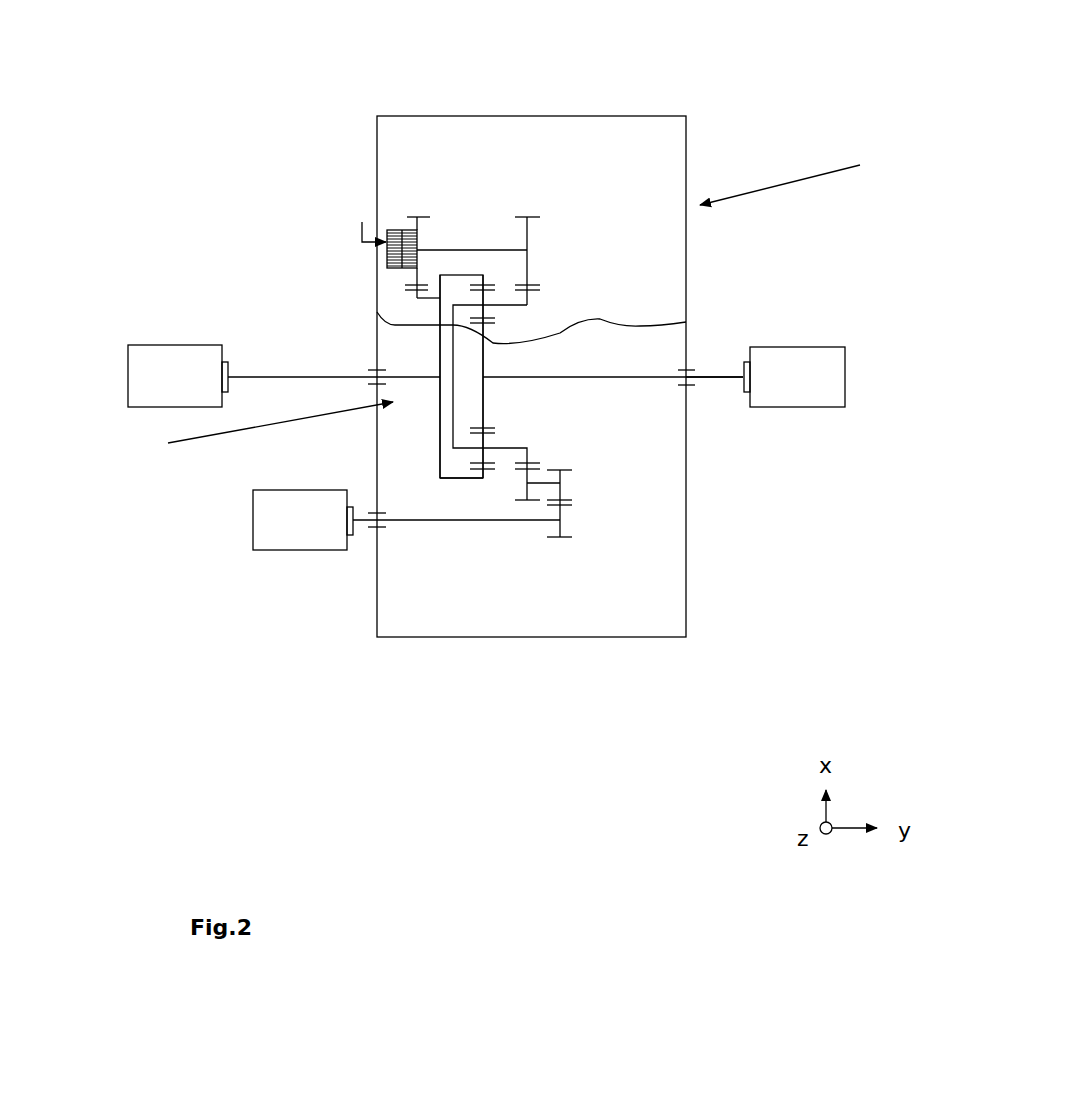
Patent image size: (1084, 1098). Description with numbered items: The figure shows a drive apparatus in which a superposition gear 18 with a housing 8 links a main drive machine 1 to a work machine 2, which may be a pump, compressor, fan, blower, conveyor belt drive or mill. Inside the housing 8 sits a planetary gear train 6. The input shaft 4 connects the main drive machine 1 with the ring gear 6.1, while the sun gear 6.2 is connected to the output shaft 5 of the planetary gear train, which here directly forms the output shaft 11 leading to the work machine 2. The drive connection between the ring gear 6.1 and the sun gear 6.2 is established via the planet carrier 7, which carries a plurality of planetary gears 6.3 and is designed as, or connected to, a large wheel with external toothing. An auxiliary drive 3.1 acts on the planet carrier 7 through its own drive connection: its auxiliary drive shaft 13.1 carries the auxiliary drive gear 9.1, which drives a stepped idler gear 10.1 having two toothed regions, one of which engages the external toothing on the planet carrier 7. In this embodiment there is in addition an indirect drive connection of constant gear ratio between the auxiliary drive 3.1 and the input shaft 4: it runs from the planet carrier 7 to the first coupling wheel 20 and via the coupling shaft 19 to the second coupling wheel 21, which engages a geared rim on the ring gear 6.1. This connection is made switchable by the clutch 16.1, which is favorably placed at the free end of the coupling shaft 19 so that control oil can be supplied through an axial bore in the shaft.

The main drive machine 1 is at (150, 345).
The work machine 2 is at (803, 347).
The auxiliary drive 3.1 is at (288, 552).
The input shaft 4 is at (240, 373).
The output shaft of the planetary gear train 5 is at (575, 378).
The planetary gear train 6 is at (308, 376).
The ring gear 6.1 is at (437, 345).
The sun gear 6.2 is at (485, 383).
The planetary gears 6.3 is at (470, 457).
The planet carrier 7 is at (527, 453).
The housing 8 is at (600, 116).
The auxiliary drive gear 9.1 is at (563, 528).
The stepped idler gear 10.1 is at (563, 487).
The output shaft 11 is at (730, 376).
The auxiliary drive shaft 13.1 is at (487, 522).
The clutch 16.1 is at (387, 253).
The superposition gear 18 is at (804, 180).
The coupling shaft 19 is at (465, 248).
The first coupling wheel 20 is at (530, 232).
The second coupling wheel 21 is at (413, 217).